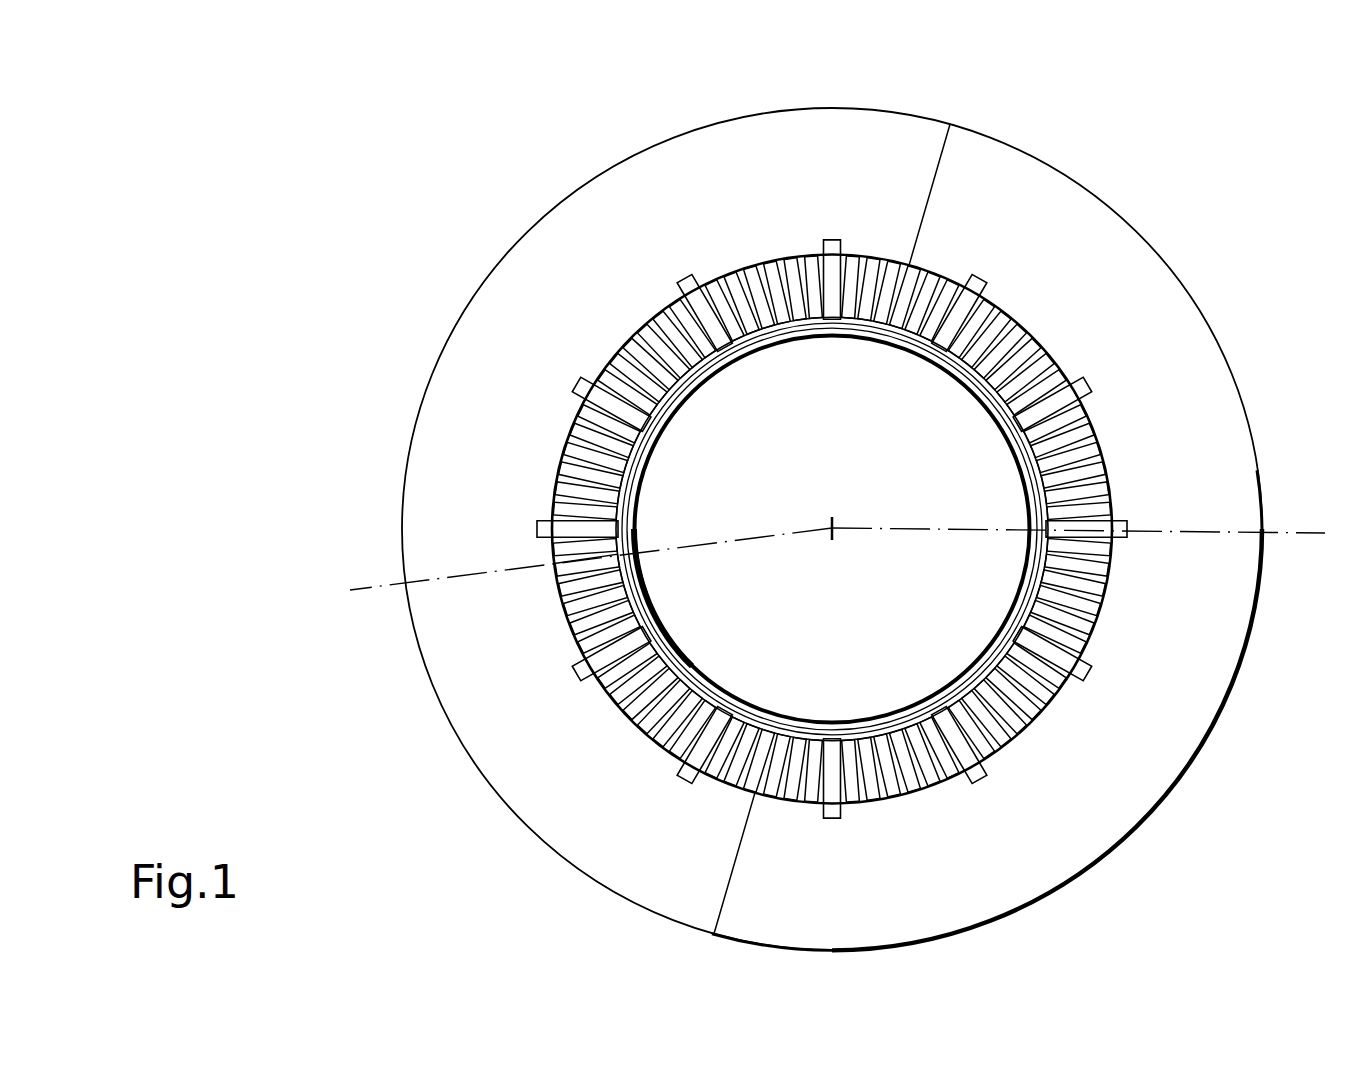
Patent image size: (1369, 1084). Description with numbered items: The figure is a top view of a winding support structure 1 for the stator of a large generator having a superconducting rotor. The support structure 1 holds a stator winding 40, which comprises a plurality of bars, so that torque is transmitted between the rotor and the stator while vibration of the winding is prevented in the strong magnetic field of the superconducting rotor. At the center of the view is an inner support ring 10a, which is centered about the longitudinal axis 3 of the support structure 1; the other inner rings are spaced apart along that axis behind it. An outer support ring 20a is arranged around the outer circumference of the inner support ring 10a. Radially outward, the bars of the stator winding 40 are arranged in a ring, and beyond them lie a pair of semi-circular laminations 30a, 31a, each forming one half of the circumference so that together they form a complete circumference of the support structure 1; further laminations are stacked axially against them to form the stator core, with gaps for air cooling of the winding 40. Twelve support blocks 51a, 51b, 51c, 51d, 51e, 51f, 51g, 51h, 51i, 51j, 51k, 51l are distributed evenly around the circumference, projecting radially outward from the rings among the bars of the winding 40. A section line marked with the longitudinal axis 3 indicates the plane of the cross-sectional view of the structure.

The winding support structure 1 is at (861, 695).
The longitudinal axis 3 is at (836, 520).
The inner support ring 10a is at (904, 358).
The outer support ring 20a is at (923, 370).
The lamination 30a is at (1185, 722).
The lamination 31a is at (493, 756).
The stator winding 40 is at (1033, 328).
The support block 51a is at (988, 285).
The support block 51b is at (1090, 384).
The support block 51c is at (1128, 537).
The support block 51d is at (1084, 674).
The support block 51e is at (977, 782).
The support block 51f is at (834, 817).
The support block 51g is at (682, 777).
The support block 51h is at (573, 672).
The support block 51i is at (537, 522).
The support block 51j is at (582, 380).
The support block 51k is at (682, 278).
The support block 51l is at (831, 238).